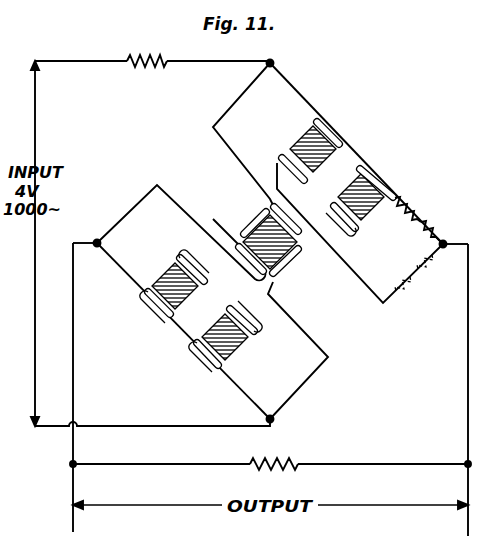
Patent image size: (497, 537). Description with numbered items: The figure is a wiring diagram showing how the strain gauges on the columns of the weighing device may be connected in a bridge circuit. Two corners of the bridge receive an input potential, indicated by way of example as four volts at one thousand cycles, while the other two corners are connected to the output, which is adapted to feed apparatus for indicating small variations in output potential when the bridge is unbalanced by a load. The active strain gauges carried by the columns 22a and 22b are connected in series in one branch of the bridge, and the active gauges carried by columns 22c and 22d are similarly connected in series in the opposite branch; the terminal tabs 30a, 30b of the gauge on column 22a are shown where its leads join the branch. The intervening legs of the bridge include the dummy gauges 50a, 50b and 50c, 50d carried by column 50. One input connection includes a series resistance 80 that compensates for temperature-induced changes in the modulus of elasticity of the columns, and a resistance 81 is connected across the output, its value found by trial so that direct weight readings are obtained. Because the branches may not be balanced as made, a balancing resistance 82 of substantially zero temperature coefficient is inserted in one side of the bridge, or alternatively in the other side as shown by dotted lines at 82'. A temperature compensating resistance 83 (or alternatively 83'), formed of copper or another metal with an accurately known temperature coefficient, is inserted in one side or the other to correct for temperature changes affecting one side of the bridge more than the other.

The series resistance 80 is at (168, 64).
The resistance across the output 81 is at (281, 452).
The column 22a is at (302, 137).
The column 22b is at (372, 217).
The column 22c is at (240, 347).
The column 22d is at (161, 278).
The gauge terminal tab 30a is at (332, 133).
The gauge terminal tab 30b is at (287, 158).
The column 50 is at (262, 217).
The dummy gauge 50a is at (300, 238).
The dummy gauge 50b is at (282, 270).
The dummy gauge 50c is at (268, 284).
The dummy gauge 50d is at (240, 237).
The balancing resistance 82 is at (441, 219).
The temperature compensating resistance 83 is at (416, 198).
The balancing resistance 82' is at (437, 276).
The temperature compensating resistance 83' is at (415, 300).